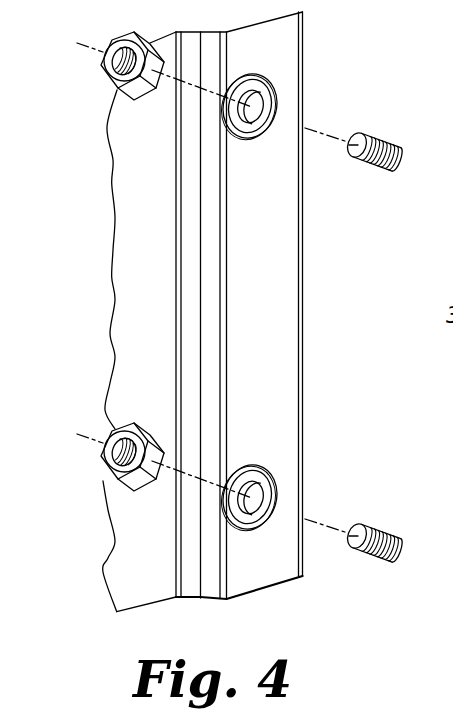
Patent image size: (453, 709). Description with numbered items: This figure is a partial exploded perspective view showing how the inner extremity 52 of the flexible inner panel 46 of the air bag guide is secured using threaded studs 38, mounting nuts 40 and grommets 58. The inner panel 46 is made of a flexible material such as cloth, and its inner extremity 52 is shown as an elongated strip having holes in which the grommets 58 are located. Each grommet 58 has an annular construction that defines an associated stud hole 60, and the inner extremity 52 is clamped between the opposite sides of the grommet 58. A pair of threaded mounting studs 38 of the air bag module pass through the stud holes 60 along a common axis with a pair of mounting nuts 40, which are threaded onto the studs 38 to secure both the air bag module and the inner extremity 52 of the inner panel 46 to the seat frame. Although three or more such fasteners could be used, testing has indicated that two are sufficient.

The threaded mounting stud 38 is at (377, 137).
The mounting nut 40 is at (106, 80).
The inner panel 46 is at (116, 217).
The inner extremity 52 is at (270, 255).
The grommet 58 is at (275, 88).
The stud hole 60 is at (252, 104).